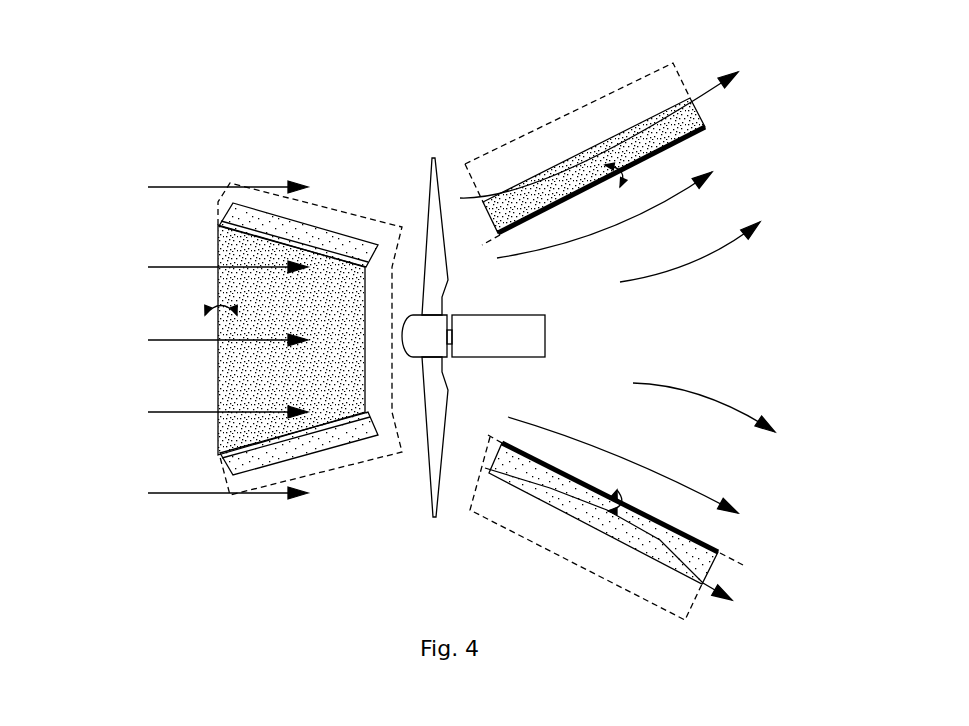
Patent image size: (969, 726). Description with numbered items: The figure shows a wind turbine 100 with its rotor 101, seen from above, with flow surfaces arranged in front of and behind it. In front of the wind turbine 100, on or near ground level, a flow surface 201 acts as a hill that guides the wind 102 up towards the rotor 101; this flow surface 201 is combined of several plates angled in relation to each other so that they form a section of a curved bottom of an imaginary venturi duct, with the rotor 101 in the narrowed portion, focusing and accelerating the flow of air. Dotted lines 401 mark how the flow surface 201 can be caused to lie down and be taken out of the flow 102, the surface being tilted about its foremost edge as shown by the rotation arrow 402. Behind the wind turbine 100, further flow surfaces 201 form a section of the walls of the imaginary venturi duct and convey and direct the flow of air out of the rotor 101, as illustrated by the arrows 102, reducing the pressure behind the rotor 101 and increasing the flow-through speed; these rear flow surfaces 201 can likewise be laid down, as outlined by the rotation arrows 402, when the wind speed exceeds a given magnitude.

The wind turbine 100 is at (522, 337).
The rotor 101 is at (432, 457).
The wind 102 is at (202, 492).
The flow surface 201 is at (252, 393).
The dotted lines 401 is at (395, 256).
The rotation arrow 402 is at (212, 303).